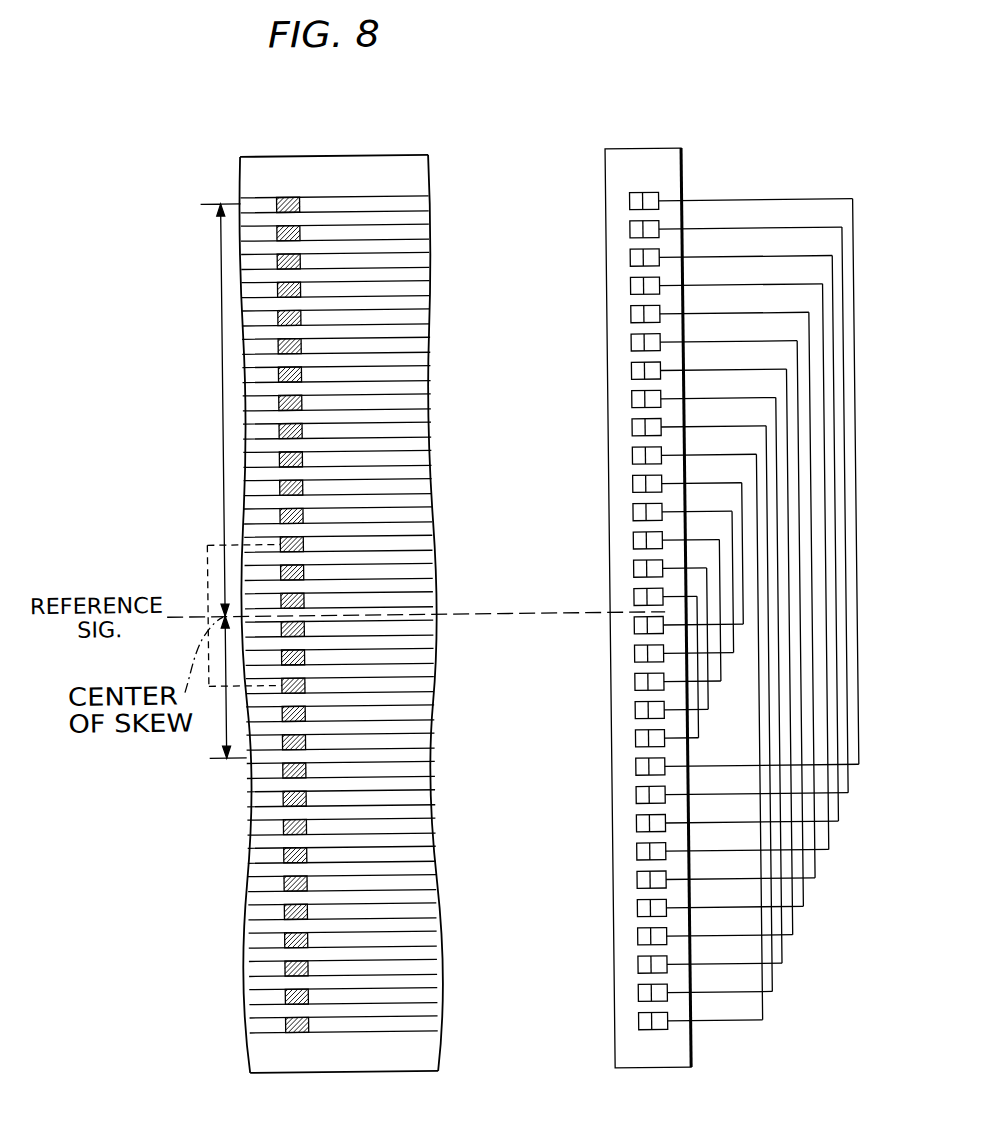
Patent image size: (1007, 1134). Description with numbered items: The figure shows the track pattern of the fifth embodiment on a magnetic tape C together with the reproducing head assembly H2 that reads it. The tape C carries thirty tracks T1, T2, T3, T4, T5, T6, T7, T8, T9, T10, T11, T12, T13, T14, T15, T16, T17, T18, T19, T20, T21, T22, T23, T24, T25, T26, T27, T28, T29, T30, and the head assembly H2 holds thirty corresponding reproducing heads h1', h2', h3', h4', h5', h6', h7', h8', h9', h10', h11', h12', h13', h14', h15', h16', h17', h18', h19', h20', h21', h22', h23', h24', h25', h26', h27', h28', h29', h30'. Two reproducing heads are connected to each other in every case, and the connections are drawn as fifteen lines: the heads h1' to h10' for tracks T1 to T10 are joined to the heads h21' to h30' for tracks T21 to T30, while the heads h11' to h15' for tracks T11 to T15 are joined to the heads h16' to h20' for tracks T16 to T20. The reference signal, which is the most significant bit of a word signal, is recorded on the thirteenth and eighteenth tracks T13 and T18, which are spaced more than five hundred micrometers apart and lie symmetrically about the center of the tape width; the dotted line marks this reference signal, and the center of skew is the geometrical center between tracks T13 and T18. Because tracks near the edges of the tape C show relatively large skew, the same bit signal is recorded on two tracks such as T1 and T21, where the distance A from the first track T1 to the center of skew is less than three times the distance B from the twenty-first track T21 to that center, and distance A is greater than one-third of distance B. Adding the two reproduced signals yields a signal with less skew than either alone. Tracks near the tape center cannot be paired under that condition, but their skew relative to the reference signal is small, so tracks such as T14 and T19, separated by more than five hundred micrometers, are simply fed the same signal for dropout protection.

The magnetic tape C is at (385, 154).
The reproducing head assembly H2 is at (647, 149).
The distance A is at (223, 410).
The distance B is at (227, 687).
The first track T1 is at (385, 204).
The second track T2 is at (386, 233).
The third track T3 is at (386, 261).
The fourth track T4 is at (386, 289).
The fifth track T5 is at (387, 317).
The sixth track T6 is at (387, 346).
The seventh track T7 is at (387, 374).
The eighth track T8 is at (388, 402).
The ninth track T9 is at (388, 430).
The tenth track T10 is at (388, 459).
The eleventh track T11 is at (389, 487).
The twelfth track T12 is at (389, 515).
The thirteenth track T13 is at (389, 544).
The fourteenth track T14 is at (390, 572).
The fifteenth track T15 is at (390, 600).
The sixteenth track T16 is at (390, 628).
The seventeenth track T17 is at (390, 657).
The eighteenth track T18 is at (391, 685).
The nineteenth track T19 is at (391, 713).
The twentieth track T20 is at (391, 742).
The twenty-first track T21 is at (392, 770).
The twenty-second track T22 is at (392, 798).
The twenty-third track T23 is at (392, 826).
The twenty-fourth track T24 is at (393, 855).
The twenty-fifth track T25 is at (393, 883).
The twenty-sixth track T26 is at (393, 911).
The twenty-seventh track T27 is at (394, 940).
The twenty-eighth track T28 is at (394, 968).
The twenty-ninth track T29 is at (394, 996).
The thirtieth track T30 is at (395, 1024).
The reproducing head h1' is at (698, 202).
The reproducing head h2' is at (693, 230).
The reproducing head h3' is at (688, 259).
The reproducing head h4' is at (683, 287).
The reproducing head h5' is at (677, 315).
The reproducing head h6' is at (671, 344).
The reproducing head h7' is at (666, 372).
The reproducing head h8' is at (661, 401).
The reproducing head h9' is at (656, 429).
The reproducing head h10' is at (651, 457).
The reproducing head h11' is at (645, 486).
The reproducing head h12' is at (640, 514).
The reproducing head h13' is at (633, 543).
The reproducing head h14' is at (628, 571).
The reproducing head h15' is at (623, 599).
The reproducing head h16' is at (646, 627).
The reproducing head h17' is at (641, 656).
The reproducing head h18' is at (635, 684).
The reproducing head h19' is at (629, 712).
The reproducing head h20' is at (624, 741).
The reproducing head h21' is at (705, 767).
The reproducing head h22' is at (699, 796).
The reproducing head h23' is at (694, 824).
The reproducing head h24' is at (690, 852).
The reproducing head h25' is at (683, 881).
The reproducing head h26' is at (677, 909).
The reproducing head h27' is at (673, 938).
The reproducing head h28' is at (667, 966).
The reproducing head h29' is at (662, 994).
The reproducing head h30' is at (657, 1023).